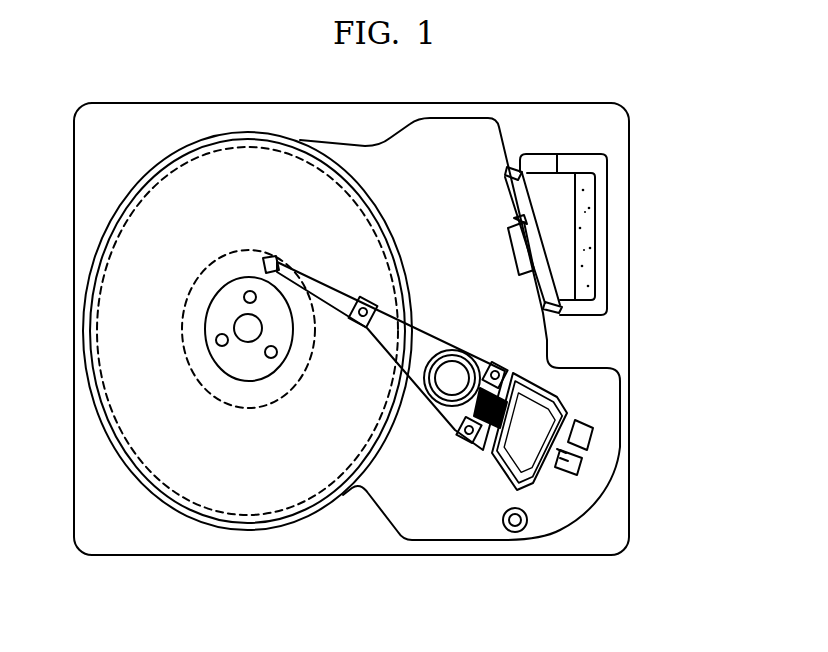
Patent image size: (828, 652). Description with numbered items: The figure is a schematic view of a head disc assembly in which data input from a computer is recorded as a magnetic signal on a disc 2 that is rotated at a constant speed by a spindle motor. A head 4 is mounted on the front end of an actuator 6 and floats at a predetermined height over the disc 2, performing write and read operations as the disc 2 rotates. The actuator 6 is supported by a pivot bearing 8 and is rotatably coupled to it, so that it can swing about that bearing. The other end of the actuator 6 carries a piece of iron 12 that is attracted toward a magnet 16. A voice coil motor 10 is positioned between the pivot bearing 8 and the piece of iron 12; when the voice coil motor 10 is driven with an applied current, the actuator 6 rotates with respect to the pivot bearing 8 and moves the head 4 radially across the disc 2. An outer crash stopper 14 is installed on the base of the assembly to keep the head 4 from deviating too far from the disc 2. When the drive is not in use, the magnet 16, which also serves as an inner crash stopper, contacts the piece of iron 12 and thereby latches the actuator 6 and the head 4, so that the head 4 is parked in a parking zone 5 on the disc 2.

The disc 2 is at (222, 497).
The head 4 is at (270, 258).
The parking zone 5 is at (192, 363).
The actuator 6 is at (421, 308).
The pivot bearing 8 is at (455, 372).
The voice coil motor 10 is at (520, 384).
The piece of iron 12 is at (583, 460).
The outer crash stopper 14 is at (516, 532).
The magnet 16 is at (590, 418).